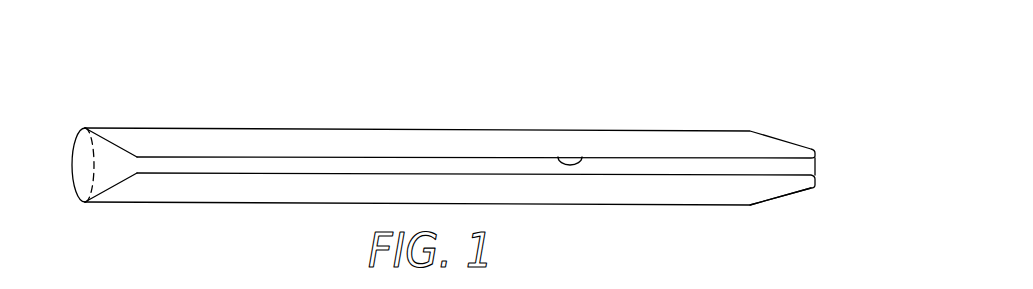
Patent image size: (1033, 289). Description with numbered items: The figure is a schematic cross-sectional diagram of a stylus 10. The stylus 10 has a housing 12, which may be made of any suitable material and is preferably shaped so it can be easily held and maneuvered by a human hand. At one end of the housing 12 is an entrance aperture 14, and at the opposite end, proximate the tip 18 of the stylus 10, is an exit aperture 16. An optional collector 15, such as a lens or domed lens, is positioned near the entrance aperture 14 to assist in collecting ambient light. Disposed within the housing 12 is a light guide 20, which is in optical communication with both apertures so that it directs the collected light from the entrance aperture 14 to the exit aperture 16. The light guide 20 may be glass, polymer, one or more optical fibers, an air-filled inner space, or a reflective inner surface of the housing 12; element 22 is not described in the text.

The stylus 10 is at (728, 51).
The housing 12 is at (332, 128).
The entrance aperture 14 is at (63, 143).
The collector 15 is at (85, 177).
The exit aperture 16 is at (825, 166).
The tip 18 is at (817, 209).
The light guide 20 is at (499, 164).
The notch 22 is at (583, 157).